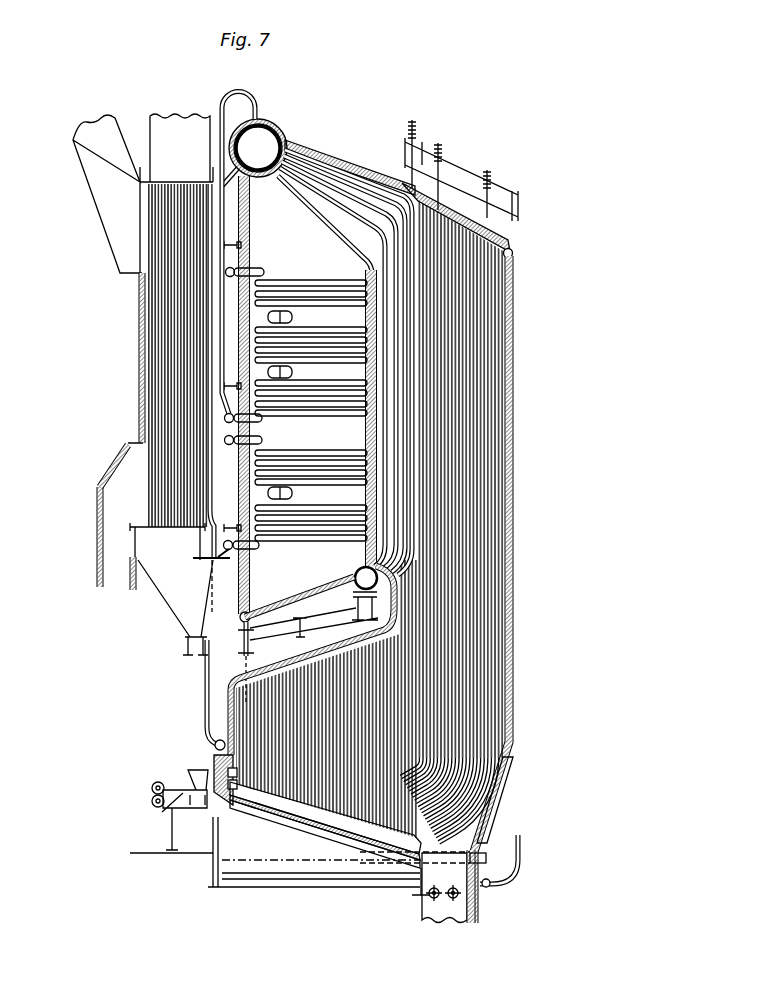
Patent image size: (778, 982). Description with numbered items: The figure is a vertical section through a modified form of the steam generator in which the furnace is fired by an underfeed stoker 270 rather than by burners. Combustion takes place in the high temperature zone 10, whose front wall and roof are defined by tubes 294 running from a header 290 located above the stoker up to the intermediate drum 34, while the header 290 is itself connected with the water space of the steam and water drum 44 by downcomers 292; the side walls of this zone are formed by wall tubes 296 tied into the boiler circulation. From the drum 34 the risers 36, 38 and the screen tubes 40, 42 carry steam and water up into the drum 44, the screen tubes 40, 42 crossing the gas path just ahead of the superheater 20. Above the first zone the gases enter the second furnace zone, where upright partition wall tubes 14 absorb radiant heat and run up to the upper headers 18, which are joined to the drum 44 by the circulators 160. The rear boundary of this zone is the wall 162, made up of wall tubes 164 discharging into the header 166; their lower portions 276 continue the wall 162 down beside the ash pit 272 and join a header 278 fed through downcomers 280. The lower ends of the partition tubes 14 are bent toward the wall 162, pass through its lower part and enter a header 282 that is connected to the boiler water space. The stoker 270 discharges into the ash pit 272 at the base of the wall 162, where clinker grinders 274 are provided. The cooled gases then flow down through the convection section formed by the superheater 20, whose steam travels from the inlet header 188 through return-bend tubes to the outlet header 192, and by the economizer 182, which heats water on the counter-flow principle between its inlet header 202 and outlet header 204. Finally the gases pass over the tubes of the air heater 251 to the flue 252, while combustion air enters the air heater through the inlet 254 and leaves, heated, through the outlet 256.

The high temperature zone 10 is at (310, 726).
The upright partition wall tubes 14 is at (464, 641).
The upper headers 18 is at (512, 237).
The superheater 20 is at (322, 348).
The upper header or drum 34 is at (356, 571).
The riser 36 is at (370, 436).
The riser 38 is at (385, 452).
The screen tube 40 is at (406, 514).
The screen tube 42 is at (399, 492).
The steam and water drum 44 is at (282, 133).
The circulators 160 is at (343, 158).
The wall of the second furnace zone 162 is at (514, 697).
The wall tubes 164 is at (514, 537).
The header 166 is at (513, 253).
The economizer 182 is at (313, 528).
The superheater inlet header 188 is at (226, 421).
The superheater outlet header 192 is at (237, 270).
The inlet header 202 is at (222, 553).
The economizer outlet header 204 is at (240, 438).
The air heater 251 is at (163, 341).
The flue 252 is at (169, 147).
The inlet 254 is at (80, 172).
The outlet 256 is at (98, 551).
The underfeed stoker 270 is at (290, 808).
The ash pit 272 is at (445, 862).
The clinker grinders 274 is at (452, 900).
The lower portions of the wall tubes 276 is at (488, 857).
The header 278 is at (491, 886).
The downcomers 280 is at (522, 878).
The header 282 is at (514, 772).
The header 290 is at (214, 745).
The downcomers 292 is at (203, 679).
The tubes 294 is at (236, 712).
The wall tubes 296 is at (370, 793).